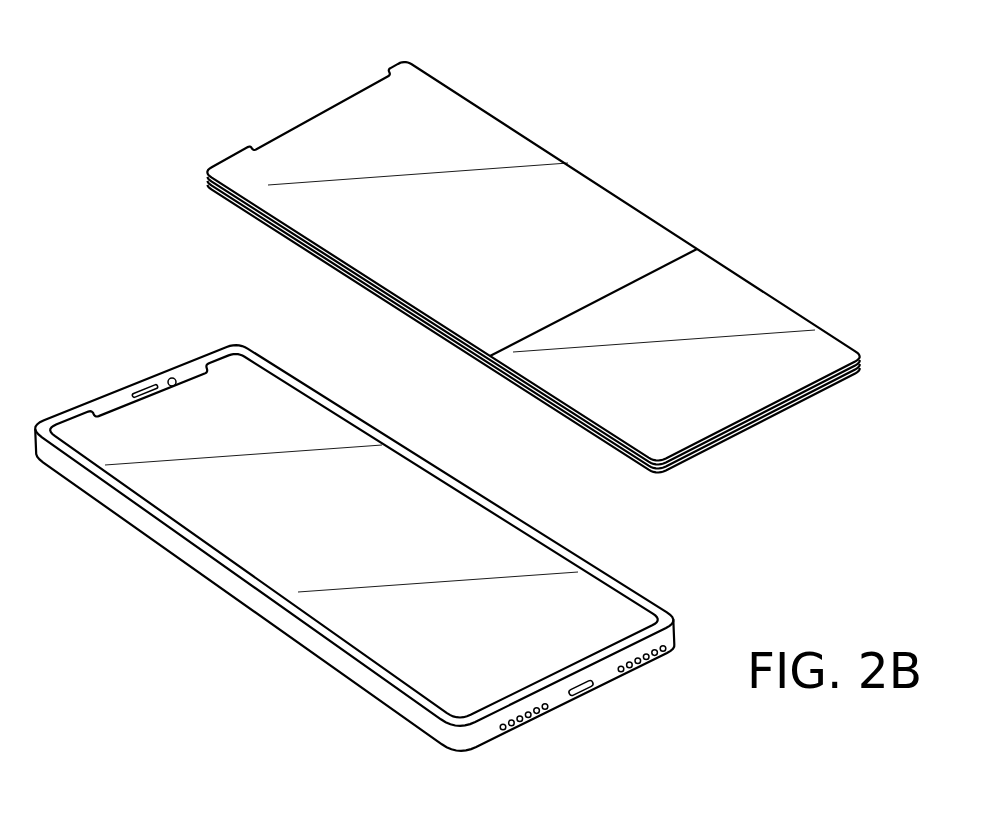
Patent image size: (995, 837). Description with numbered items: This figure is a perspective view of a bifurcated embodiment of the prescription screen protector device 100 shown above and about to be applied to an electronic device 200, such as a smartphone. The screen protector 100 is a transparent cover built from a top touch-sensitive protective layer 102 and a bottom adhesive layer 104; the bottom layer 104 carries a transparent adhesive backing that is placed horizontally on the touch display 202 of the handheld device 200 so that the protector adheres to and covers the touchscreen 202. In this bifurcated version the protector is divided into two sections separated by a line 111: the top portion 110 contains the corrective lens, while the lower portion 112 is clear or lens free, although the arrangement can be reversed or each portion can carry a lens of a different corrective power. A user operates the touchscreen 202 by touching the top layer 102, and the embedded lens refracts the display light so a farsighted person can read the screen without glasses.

The prescription screen protector device 100 is at (243, 90).
The top touch-sensitive protective layer 102 is at (595, 183).
The bottom adhesive layer 104 is at (262, 222).
The top portion 110 is at (633, 237).
The line 111 is at (682, 257).
The lower portion 112 is at (710, 283).
The electronic device 200 is at (93, 350).
The touch display 202 is at (233, 525).